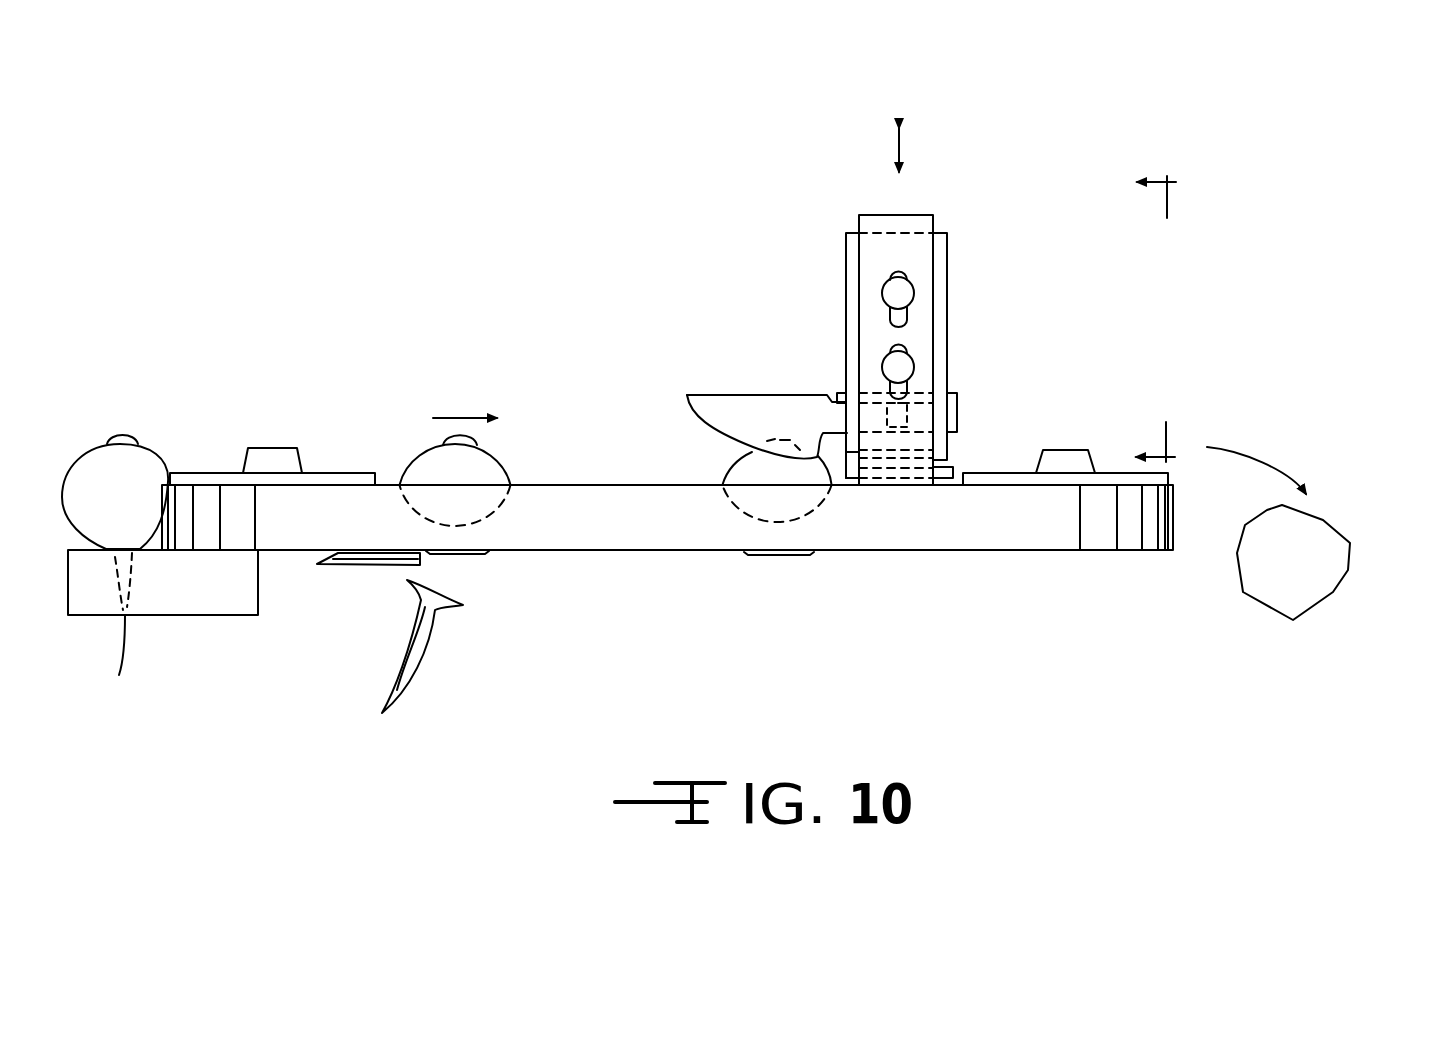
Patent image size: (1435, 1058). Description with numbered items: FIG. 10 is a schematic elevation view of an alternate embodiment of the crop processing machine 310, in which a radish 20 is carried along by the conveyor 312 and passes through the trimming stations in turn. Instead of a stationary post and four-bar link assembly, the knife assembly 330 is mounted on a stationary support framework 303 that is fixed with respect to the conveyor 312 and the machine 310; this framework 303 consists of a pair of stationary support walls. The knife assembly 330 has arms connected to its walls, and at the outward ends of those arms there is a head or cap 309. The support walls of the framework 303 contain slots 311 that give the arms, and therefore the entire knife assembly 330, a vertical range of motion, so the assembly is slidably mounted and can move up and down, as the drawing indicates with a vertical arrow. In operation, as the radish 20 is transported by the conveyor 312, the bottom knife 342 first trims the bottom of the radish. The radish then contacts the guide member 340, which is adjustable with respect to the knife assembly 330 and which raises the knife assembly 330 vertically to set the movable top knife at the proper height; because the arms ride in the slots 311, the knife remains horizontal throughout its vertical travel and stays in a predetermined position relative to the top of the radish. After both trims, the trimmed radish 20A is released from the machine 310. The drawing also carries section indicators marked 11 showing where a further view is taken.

The radish 20 is at (85, 448).
The trimmed radish 20A is at (1338, 590).
The section line 11- 11 is at (1144, 306).
The stationary support framework 303 is at (873, 213).
The head or cap 309 is at (917, 297).
The crop processing machine 310 is at (557, 380).
The slots 311 is at (903, 318).
The conveyor 312 is at (1037, 551).
The knife assembly 330 is at (948, 255).
The guide member 340 is at (733, 395).
The bottom knife 342 is at (368, 563).